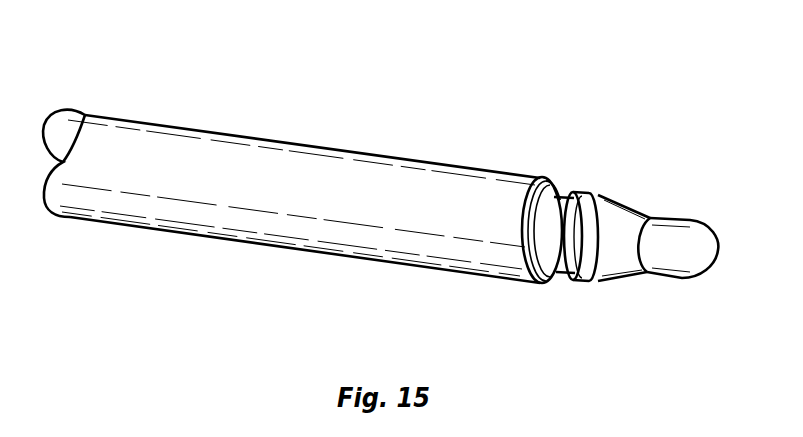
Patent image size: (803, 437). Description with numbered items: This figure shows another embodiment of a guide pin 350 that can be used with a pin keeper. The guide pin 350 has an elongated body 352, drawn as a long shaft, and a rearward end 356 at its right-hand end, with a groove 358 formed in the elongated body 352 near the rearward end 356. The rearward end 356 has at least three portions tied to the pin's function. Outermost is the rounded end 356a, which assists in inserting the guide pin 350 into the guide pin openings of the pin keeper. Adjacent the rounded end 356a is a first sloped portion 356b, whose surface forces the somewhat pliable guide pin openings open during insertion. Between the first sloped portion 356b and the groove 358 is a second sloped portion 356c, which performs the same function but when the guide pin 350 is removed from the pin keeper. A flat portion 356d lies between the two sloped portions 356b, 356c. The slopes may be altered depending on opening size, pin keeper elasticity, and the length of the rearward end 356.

The guide pin 350 is at (369, 128).
The elongated body 352 is at (210, 131).
The rearward end 356 is at (715, 305).
The rounded end 356a is at (691, 217).
The first sloped portion 356b is at (628, 200).
The second sloped portion 356c is at (582, 198).
The flat portion 356d is at (607, 195).
The groove 358 is at (552, 205).